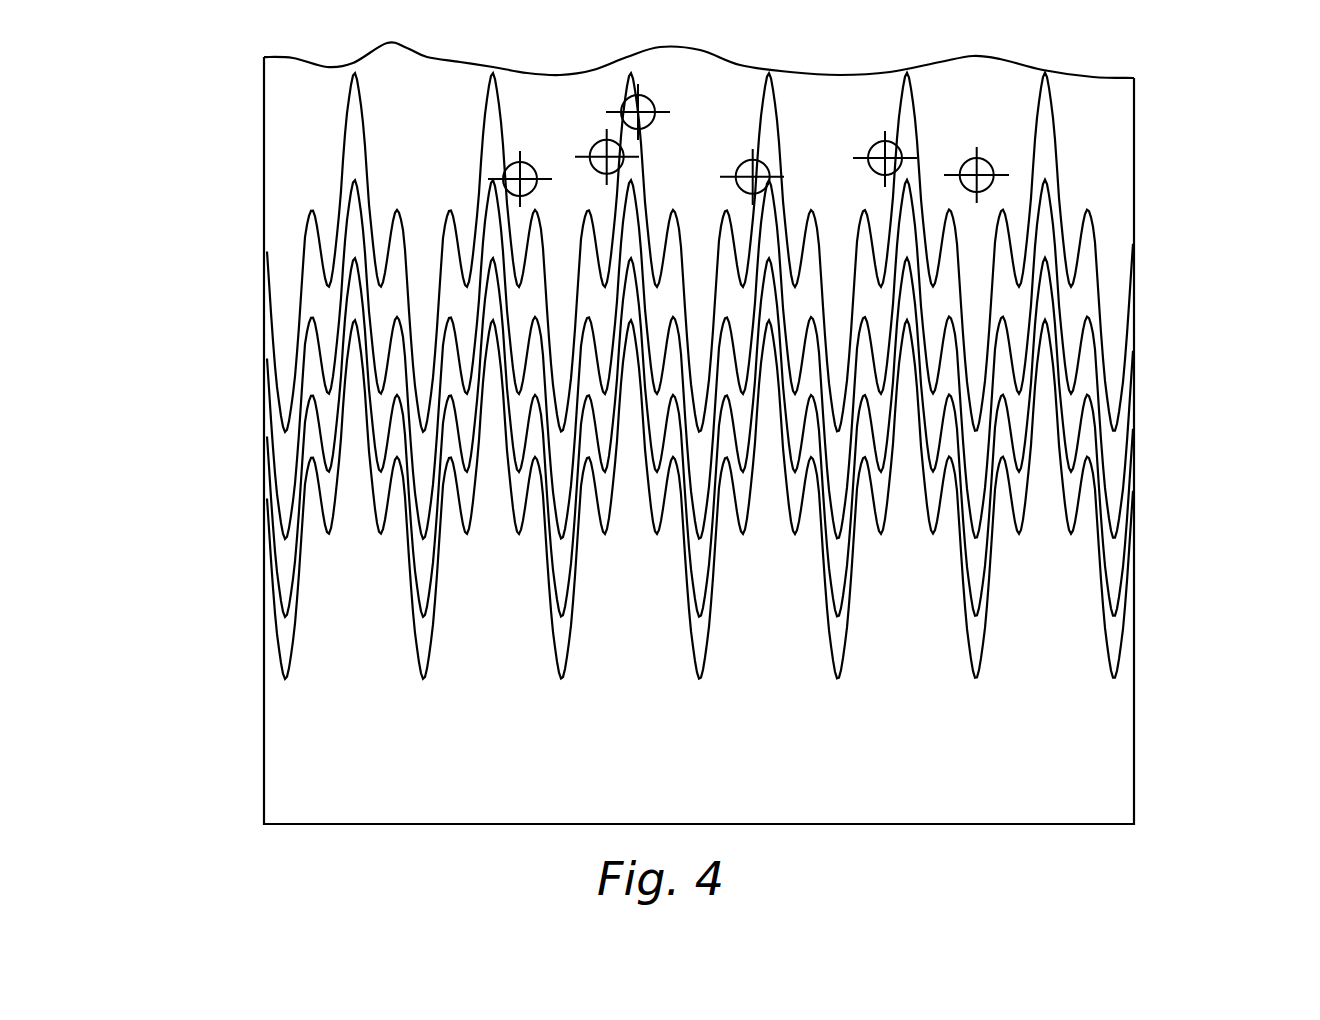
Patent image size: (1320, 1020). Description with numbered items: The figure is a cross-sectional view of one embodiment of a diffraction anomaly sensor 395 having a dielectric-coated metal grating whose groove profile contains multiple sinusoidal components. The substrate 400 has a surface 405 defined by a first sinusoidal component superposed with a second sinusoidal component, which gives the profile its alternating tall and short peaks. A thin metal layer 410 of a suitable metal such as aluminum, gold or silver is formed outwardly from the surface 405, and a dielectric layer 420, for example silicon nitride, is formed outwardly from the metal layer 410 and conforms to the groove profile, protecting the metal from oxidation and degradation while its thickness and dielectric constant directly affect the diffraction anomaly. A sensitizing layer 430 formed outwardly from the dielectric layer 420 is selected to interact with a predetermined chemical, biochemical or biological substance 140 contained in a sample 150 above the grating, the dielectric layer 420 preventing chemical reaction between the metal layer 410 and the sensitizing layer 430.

The substrate 400 is at (733, 765).
The sample 150 is at (1098, 92).
The sensitizing layer 430 is at (1134, 233).
The dielectric layer 420 is at (1134, 338).
The thin metal layer 410 is at (1134, 415).
The surface 405 is at (268, 643).
The substance 140 is at (988, 158).
The diffraction anomaly sensor 395 is at (1200, 163).